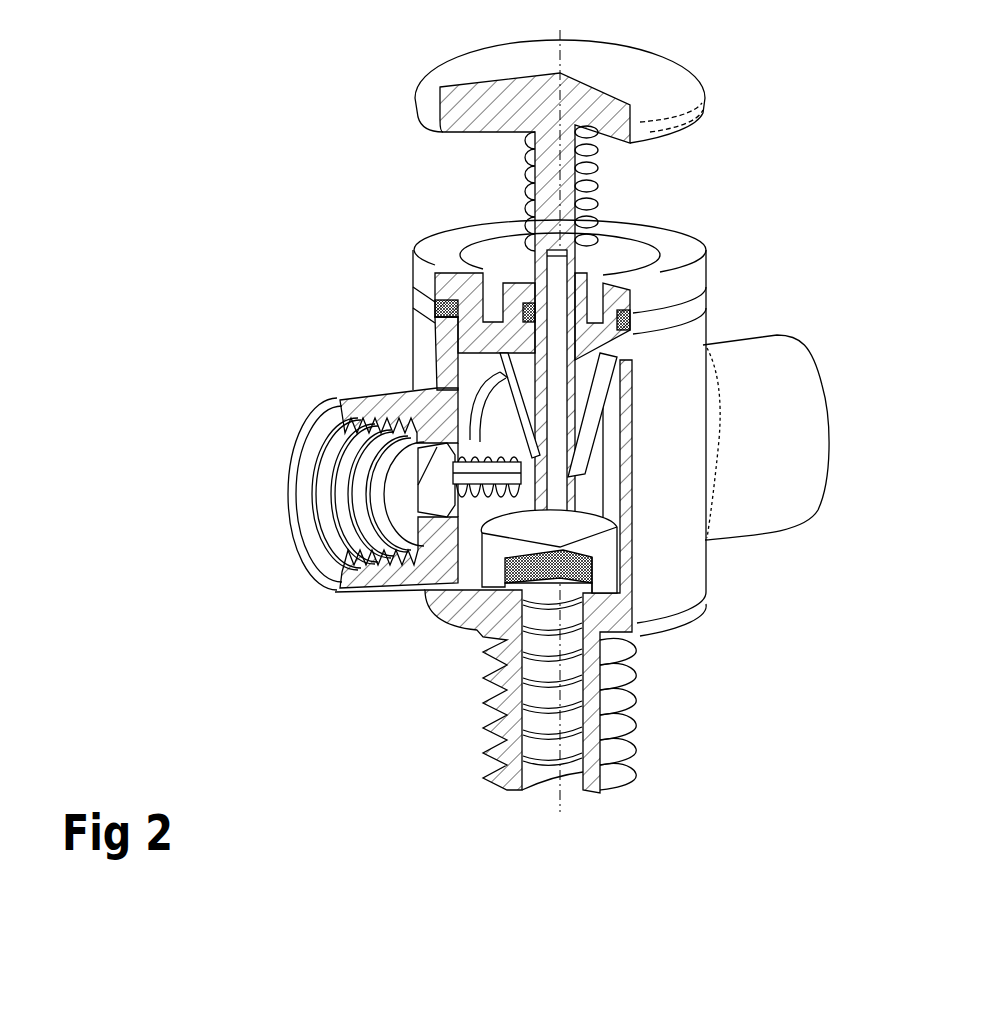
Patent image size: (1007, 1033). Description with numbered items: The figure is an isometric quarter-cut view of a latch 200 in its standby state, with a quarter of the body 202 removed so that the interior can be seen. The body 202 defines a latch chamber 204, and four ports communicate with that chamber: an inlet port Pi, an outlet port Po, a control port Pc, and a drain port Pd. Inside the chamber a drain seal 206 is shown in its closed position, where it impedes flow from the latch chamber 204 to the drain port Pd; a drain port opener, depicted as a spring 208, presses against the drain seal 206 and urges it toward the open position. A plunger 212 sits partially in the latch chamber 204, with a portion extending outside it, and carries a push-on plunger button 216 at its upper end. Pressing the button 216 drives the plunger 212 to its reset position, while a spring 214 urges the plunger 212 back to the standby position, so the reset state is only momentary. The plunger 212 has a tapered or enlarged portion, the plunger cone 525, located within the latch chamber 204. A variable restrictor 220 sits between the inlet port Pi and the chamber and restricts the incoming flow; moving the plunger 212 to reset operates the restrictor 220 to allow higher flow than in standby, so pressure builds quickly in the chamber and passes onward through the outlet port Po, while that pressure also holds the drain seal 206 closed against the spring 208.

The latch 200 is at (437, 256).
The body 202 is at (663, 472).
The latch chamber 204 is at (598, 498).
The drain seal 206 is at (518, 592).
The spring 208 is at (530, 575).
The plunger 212 is at (583, 128).
The spring 214 is at (598, 256).
The plunger button 216 is at (657, 80).
The variable restrictor 220 is at (425, 495).
The plunger cone 525 is at (590, 410).
The inlet port Pi is at (270, 511).
The outlet port Po is at (472, 411).
The control port Pc is at (848, 421).
The drain port Pd is at (550, 781).